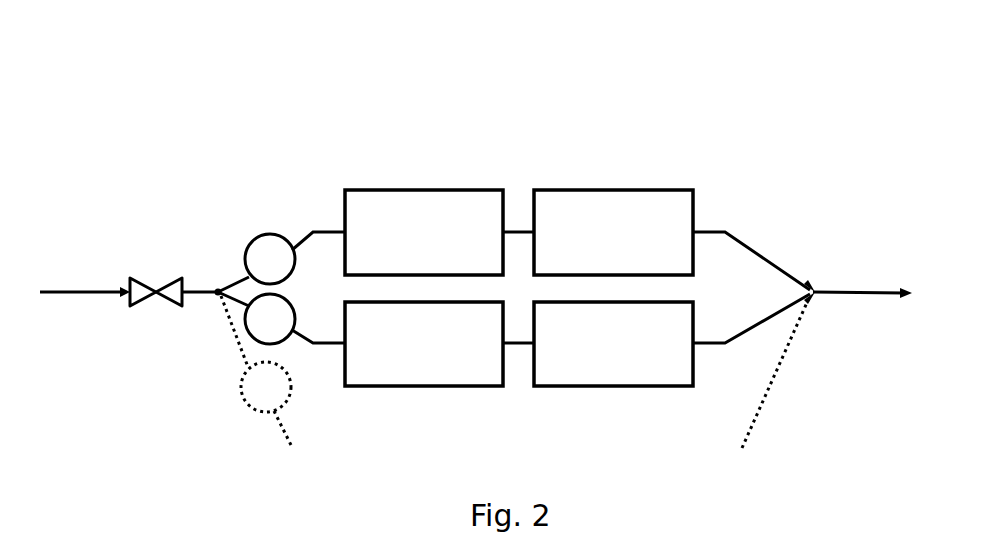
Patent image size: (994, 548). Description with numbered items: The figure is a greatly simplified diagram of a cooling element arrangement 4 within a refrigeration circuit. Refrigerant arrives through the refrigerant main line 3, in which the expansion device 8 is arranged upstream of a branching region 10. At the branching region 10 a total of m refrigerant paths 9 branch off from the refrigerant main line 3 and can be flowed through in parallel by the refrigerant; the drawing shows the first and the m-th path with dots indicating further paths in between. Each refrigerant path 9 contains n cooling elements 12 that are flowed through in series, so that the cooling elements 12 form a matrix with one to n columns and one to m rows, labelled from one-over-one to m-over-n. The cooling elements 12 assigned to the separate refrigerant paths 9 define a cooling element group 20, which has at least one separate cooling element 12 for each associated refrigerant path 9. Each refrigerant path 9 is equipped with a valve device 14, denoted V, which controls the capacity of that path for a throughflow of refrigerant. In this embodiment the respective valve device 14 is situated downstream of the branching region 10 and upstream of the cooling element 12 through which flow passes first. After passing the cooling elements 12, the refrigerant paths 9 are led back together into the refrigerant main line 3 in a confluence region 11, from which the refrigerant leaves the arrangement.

The refrigerant main line 3 is at (67, 288).
The cooling element arrangement 4 is at (256, 128).
The expansion device 8 is at (166, 277).
The refrigerant paths 9 is at (752, 248).
The branching region 10 is at (217, 288).
The confluence region 11 is at (822, 285).
The cooling element 12 is at (385, 189).
The valve device 14 is at (252, 241).
The cooling element group 20 is at (703, 150).